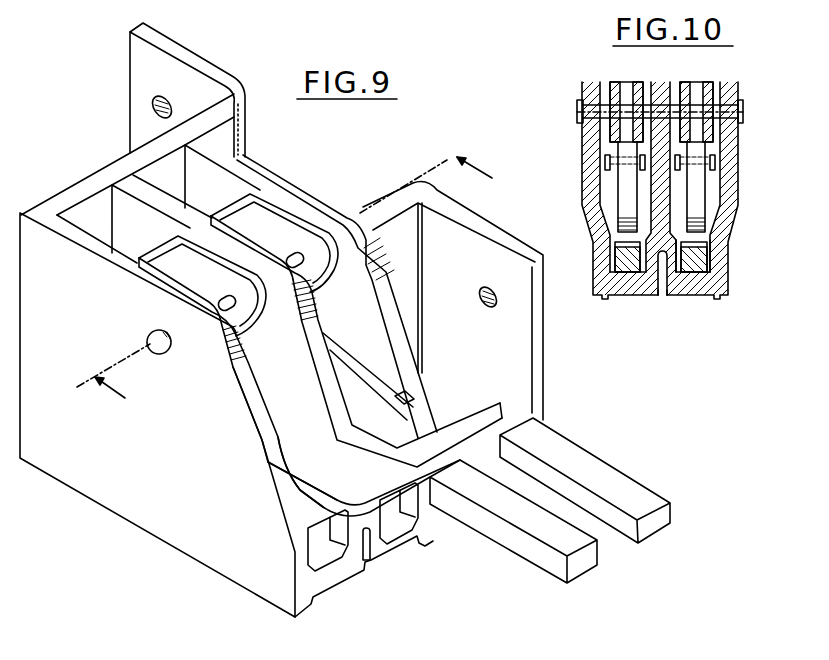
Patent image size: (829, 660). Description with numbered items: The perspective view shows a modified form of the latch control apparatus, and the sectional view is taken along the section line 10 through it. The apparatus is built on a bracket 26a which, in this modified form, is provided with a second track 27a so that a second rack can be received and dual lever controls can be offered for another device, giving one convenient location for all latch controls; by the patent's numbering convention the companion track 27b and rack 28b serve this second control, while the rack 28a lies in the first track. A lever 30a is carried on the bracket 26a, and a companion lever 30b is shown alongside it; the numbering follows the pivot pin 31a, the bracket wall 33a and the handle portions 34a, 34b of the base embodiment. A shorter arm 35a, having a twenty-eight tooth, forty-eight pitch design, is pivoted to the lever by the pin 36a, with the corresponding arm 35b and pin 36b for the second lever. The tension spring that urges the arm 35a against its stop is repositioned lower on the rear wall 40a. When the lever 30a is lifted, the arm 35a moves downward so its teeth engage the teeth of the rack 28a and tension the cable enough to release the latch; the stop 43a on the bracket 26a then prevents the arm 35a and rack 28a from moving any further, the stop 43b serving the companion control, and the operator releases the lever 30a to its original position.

In FIG. 9, the section line 10 is at (295, 278).
In FIG. 9, the bracket 26a is at (205, 474).
In FIG. 9, the second track 27a is at (395, 522).
In FIG. 10, the second track 27a is at (707, 275).
In FIG. 9, the slot 27b is at (325, 562).
In FIG. 10, the slot 27b is at (653, 293).
In FIG. 10, the rack 28a is at (693, 268).
In FIG. 10, the insert boss 28b is at (622, 270).
In FIG. 9, the lever 30a is at (230, 208).
In FIG. 10, the lever 30a is at (700, 88).
In FIG. 9, the contact member 30b is at (158, 255).
In FIG. 10, the contact member 30b is at (632, 83).
In FIG. 9, the pin 31a is at (159, 354).
In FIG. 10, the pin 31a is at (743, 107).
In FIG. 9, the bracket 33a is at (312, 207).
In FIG. 9, the terminal bar 34a is at (617, 473).
In FIG. 9, the terminal bar 34b is at (535, 553).
In FIG. 10, the shorter arm 35a is at (697, 202).
In FIG. 10, the contact stem 35b is at (623, 203).
In FIG. 10, the retaining clip 36a is at (715, 163).
In FIG. 10, the retaining clip 36b is at (605, 163).
In FIG. 9, the rear wall 40a is at (118, 173).
In FIG. 9, the stop 43a is at (403, 400).
In FIG. 9, the latch tab 43b is at (297, 467).